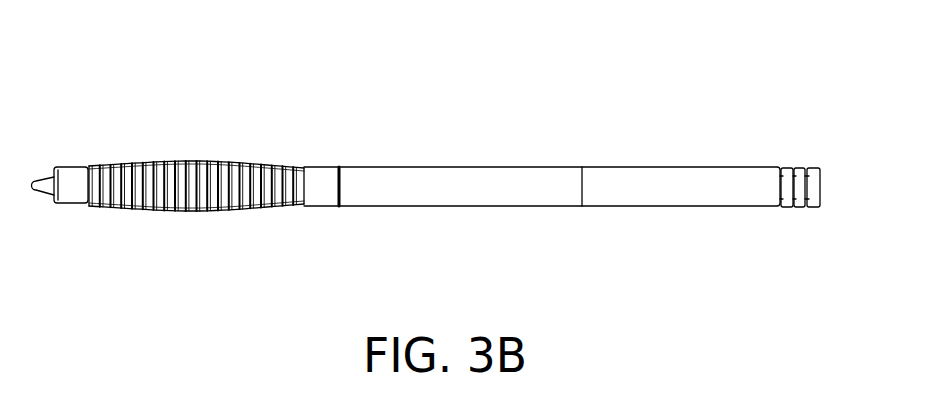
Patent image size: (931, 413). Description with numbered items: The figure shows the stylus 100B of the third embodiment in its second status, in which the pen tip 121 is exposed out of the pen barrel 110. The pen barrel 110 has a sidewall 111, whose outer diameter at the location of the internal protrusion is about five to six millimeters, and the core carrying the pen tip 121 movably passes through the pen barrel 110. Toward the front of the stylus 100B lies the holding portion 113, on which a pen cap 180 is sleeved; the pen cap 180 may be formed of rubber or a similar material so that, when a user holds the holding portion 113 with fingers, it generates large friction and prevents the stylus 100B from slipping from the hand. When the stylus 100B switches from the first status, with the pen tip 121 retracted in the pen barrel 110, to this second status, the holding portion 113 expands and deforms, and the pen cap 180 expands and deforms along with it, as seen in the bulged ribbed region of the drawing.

The stylus 100B is at (847, 307).
The pen barrel 110 is at (463, 158).
The sidewall 111 is at (550, 187).
The holding portion 113 is at (230, 160).
The pen tip 121 is at (50, 178).
The pen cap 180 is at (304, 192).